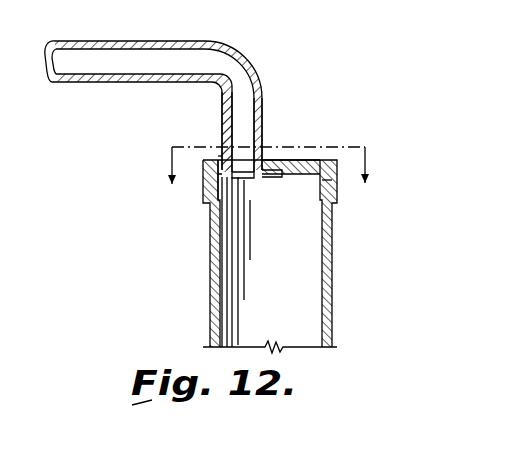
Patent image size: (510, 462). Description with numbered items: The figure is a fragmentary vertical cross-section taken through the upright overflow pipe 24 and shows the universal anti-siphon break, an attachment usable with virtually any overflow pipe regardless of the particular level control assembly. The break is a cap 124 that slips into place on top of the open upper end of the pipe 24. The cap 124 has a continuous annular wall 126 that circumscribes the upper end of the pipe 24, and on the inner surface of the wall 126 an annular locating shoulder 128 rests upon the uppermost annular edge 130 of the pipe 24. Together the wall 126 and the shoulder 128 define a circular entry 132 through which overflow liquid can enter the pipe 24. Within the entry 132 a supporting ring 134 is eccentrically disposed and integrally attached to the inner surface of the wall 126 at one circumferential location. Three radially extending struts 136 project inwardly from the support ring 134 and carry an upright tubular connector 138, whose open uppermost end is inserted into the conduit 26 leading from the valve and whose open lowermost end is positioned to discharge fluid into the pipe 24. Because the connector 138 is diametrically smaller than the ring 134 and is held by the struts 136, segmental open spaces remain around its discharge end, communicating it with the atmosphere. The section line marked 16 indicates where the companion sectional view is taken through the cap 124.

The conduit 26 is at (212, 43).
The tubular connector 138 is at (221, 134).
The cap 124 is at (313, 168).
The uppermost annular edge 130 is at (282, 178).
The supporting ring 134 is at (303, 152).
The circular entry 132 is at (335, 164).
The annular locating shoulder 128 is at (324, 187).
The annular wall 126 is at (203, 197).
The radially extending struts 136 is at (222, 157).
The overflow pipe 24 is at (212, 298).
The upright rod 16 is at (263, 182).